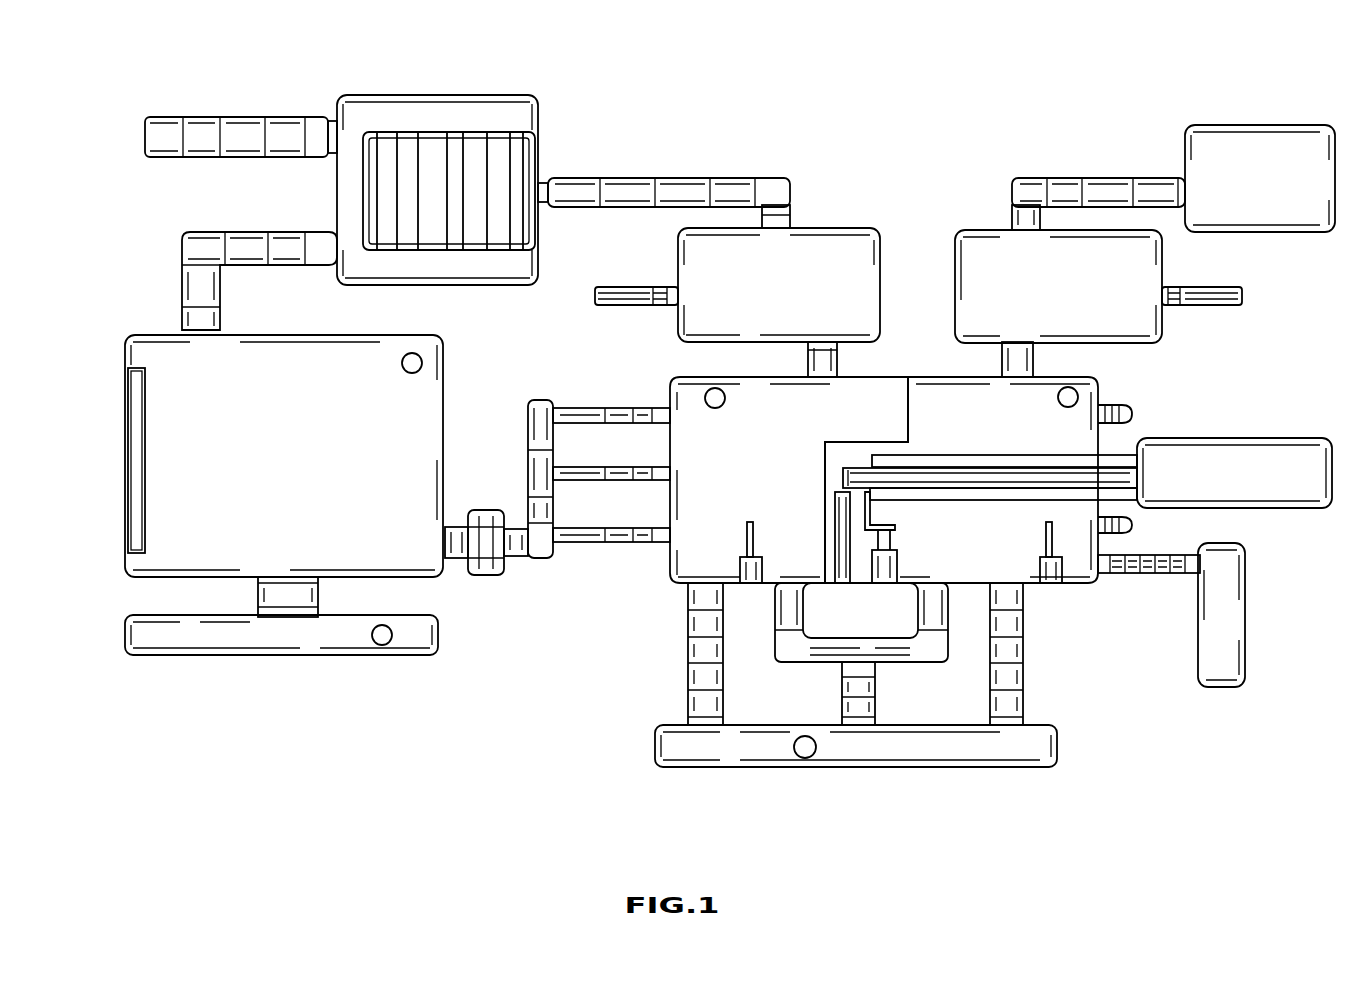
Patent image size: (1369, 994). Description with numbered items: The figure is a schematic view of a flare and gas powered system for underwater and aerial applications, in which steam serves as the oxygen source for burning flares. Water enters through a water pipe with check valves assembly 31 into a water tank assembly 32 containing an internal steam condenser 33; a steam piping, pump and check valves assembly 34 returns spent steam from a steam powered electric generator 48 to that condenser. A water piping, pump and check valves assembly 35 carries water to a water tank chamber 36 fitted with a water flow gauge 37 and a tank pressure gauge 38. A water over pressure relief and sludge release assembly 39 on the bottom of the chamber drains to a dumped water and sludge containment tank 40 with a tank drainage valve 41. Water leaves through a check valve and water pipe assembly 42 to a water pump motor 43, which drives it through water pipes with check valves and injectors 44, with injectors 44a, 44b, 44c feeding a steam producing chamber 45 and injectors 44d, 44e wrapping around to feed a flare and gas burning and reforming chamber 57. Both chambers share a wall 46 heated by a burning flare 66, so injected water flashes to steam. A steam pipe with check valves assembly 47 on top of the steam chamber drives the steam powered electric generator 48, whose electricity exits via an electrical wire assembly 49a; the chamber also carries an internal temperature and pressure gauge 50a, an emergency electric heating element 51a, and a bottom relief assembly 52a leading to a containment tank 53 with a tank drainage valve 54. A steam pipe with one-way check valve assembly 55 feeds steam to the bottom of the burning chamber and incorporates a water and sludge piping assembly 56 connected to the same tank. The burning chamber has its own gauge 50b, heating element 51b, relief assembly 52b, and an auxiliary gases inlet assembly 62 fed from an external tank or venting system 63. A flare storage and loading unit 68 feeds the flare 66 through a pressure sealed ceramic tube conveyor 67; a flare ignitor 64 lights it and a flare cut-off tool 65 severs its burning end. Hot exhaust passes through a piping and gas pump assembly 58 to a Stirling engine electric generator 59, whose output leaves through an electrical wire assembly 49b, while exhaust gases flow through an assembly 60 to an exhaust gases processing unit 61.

The water pipe with check valves assembly 31 is at (230, 116).
The water tank assembly 32 is at (478, 93).
The steam condenser 33 is at (526, 175).
The steam piping, pump and check valves assembly 34 is at (657, 177).
The water piping, pump and check valves assembly 35 is at (278, 231).
The water tank chamber 36 is at (162, 333).
The water flow gauge 37 is at (136, 470).
The tank pressure gauge 38 is at (412, 353).
The water over pressure relief and sludge release check valves, piping and pump asse 39 is at (256, 597).
The dumped water and sludge containment tank 40 is at (292, 655).
The tank drainage valve 41 is at (380, 643).
The check valve and water pipe assembly 42 is at (451, 526).
The water pump motor 43 is at (502, 578).
The water pipes with check valves and injectors 44 is at (530, 462).
The water pipe with check valves and injector 44a is at (625, 543).
The water pipe with check valves and injector 44b is at (630, 481).
The water pipe with check valves and injector 44c is at (630, 424).
The water pipe with check valves and injector 44d is at (1137, 415).
The water pipe with check valves and injector 44e is at (1112, 535).
The steam producing chamber 45 is at (686, 374).
The shared wall 46 is at (906, 407).
The steam pipe with check valves assembly 47 is at (840, 357).
The steam powered electric generator 48 is at (870, 225).
The electrical wire assembly 49a is at (590, 297).
The electrical wire assembly 49b is at (1250, 298).
The internal temperature and pressure gauge 50a is at (717, 395).
The internal temperature and pressure gauge 50b is at (1068, 393).
The internal emergency high temperature electric heating element 51a is at (738, 530).
The internal emergency high temperature electric heating element 51b is at (1040, 532).
The steam over pressure relief and sludge release check valves, piping and pump asse 52a is at (686, 617).
The steam over pressure relief and sludge release check valves, piping and pump asse 52b is at (1027, 704).
The dumped water and sludge containment tank 53 is at (653, 748).
The tank drainage valve 54 is at (810, 740).
The steam pipe with one-way check valve assembly 55 is at (774, 642).
The water and sludge piping, pump and check valves assembly 56 is at (878, 705).
The flare and gas burning and reforming chamber 57 is at (930, 373).
The steam and exhaust gases piping, gas pump and check valves assembly 58 is at (1000, 358).
The turbine or mechanical generator and/or Stirling engine electric generator 59 is at (975, 228).
The exhaust gases piping, pump and check valves assembly 60 is at (1126, 175).
The exhaust gases processing unit 61 is at (1279, 122).
The auxiliary gases inlet pipe, pump and check valves assembly 62 is at (1120, 575).
The external tank or venting system 63 is at (1250, 575).
The flare ignitor 64 is at (843, 585).
The flare cut-off tool 65 is at (880, 511).
The flare 66 is at (993, 478).
The pressure sealed ceramic tube conveyor for flares 67 is at (1076, 503).
The flare storage and loading unit 68 is at (1223, 436).